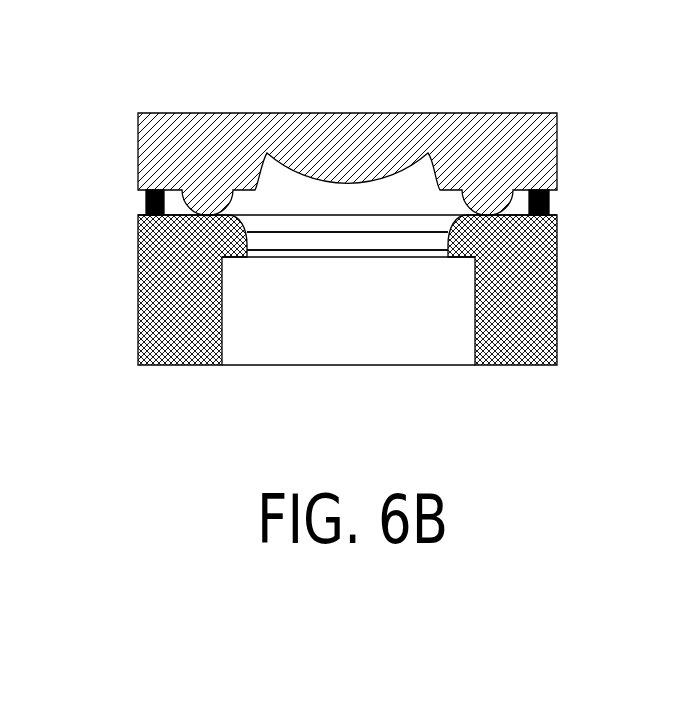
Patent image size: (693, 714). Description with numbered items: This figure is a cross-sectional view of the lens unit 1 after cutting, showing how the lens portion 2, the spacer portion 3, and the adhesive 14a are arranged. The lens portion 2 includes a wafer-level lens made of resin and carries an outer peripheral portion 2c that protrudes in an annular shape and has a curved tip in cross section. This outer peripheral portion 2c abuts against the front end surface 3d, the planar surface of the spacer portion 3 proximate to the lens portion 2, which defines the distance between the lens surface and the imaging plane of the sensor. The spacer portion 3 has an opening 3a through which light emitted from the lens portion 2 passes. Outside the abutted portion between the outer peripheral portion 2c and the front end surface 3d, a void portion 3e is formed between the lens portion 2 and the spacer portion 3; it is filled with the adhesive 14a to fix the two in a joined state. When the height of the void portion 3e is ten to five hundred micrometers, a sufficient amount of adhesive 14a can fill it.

The lens unit 1 is at (527, 65).
The lens portion 2 is at (317, 164).
The outer peripheral portion 2c is at (462, 208).
The adhesive 14a is at (146, 195).
The spacer portion 3 is at (346, 311).
The opening 3a is at (173, 216).
The front end surface 3d is at (146, 210).
The void portion 3e is at (551, 206).